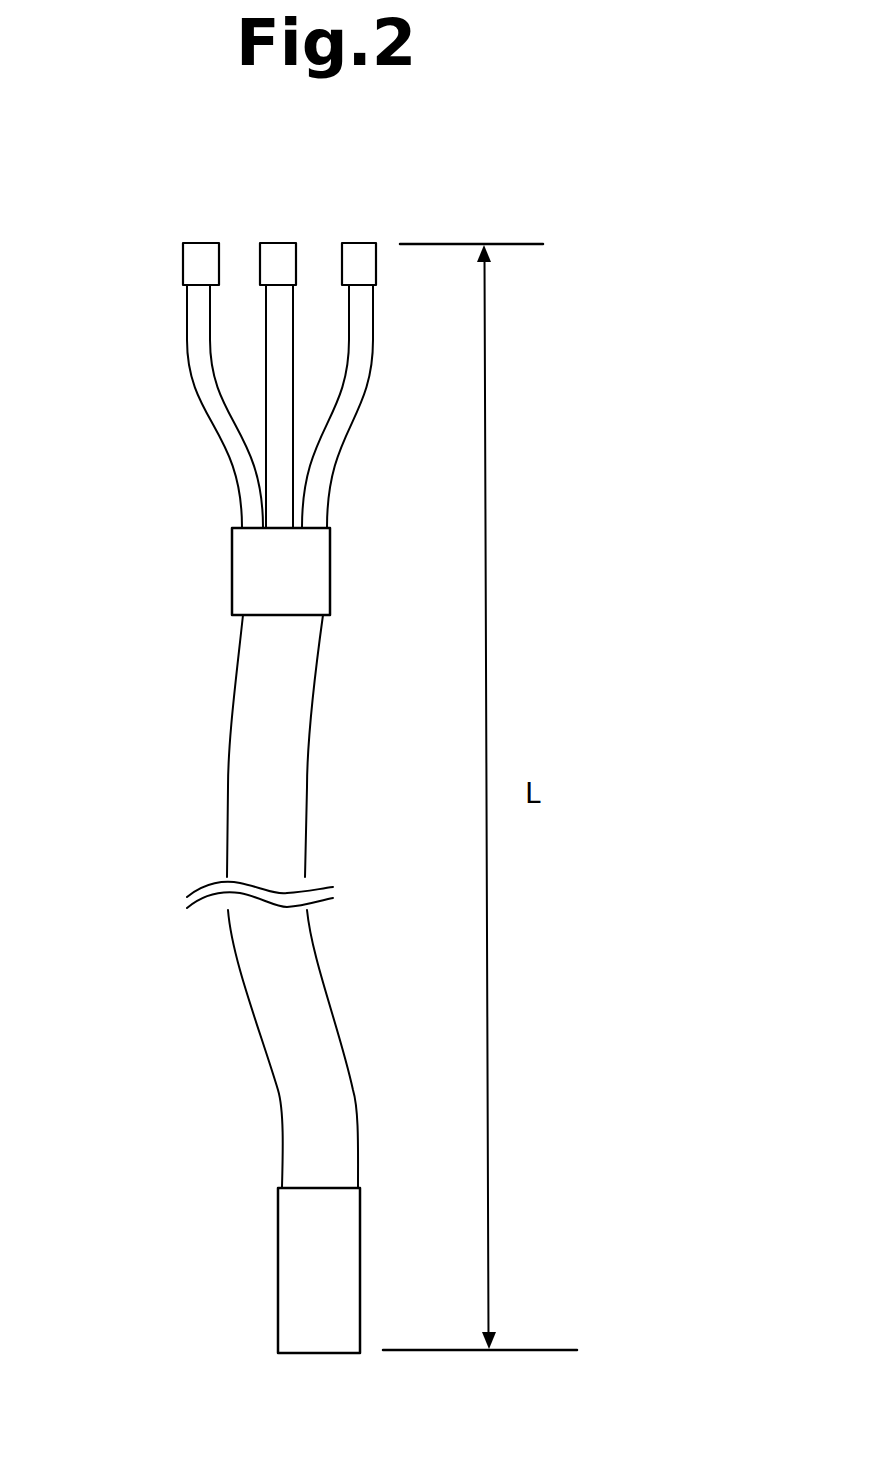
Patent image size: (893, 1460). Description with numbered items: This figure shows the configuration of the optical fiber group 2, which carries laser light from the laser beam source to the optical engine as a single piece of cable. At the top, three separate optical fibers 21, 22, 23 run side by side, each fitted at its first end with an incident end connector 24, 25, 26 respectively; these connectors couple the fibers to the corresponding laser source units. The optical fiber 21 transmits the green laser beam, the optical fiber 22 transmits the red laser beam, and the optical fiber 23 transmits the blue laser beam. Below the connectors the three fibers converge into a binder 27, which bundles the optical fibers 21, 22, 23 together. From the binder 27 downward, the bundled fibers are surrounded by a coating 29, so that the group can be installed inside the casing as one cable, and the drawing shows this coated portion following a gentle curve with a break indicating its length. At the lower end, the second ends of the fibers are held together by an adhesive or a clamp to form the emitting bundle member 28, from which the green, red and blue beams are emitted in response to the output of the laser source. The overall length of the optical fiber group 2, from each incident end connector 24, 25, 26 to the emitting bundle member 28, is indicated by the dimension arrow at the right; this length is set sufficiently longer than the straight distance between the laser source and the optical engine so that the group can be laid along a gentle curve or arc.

The optical fiber group 2 is at (243, 807).
The optical fiber 21 is at (193, 347).
The optical fiber 22 is at (283, 372).
The optical fiber 23 is at (363, 345).
The incident end connector 24 is at (207, 253).
The incident end connector 25 is at (280, 253).
The incident end connector 26 is at (365, 257).
The binder 27 is at (273, 558).
The emitting bundle member 28 is at (298, 1285).
The coating 29 is at (252, 1018).